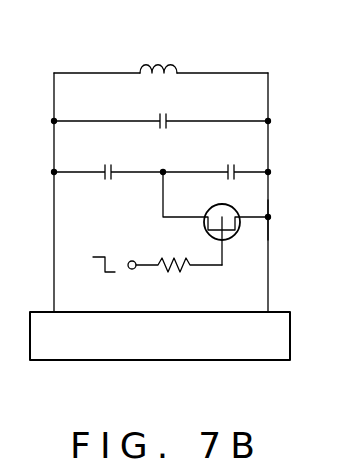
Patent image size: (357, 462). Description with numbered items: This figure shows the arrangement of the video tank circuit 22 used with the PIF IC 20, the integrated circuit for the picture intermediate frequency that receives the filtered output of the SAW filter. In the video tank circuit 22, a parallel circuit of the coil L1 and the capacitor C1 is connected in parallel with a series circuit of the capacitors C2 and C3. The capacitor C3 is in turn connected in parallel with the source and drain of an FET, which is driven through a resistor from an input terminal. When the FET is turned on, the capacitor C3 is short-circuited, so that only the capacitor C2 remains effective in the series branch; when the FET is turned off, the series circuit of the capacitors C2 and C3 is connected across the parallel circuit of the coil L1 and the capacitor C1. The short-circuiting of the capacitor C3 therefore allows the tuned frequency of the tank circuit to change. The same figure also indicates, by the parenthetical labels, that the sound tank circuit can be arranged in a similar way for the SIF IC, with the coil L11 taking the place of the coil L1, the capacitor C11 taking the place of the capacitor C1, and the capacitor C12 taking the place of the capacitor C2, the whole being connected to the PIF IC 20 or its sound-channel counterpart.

The coil L1 is at (161, 51).
The coil L11 is at (158, 68).
The capacitor C1 is at (161, 105).
The capacitor C11 is at (163, 114).
The capacitor C2 is at (108, 154).
The capacitor C12 is at (108, 165).
The capacitor C3 is at (231, 165).
The video tank circuit 22 is at (271, 172).
The PIF IC 20 is at (292, 338).